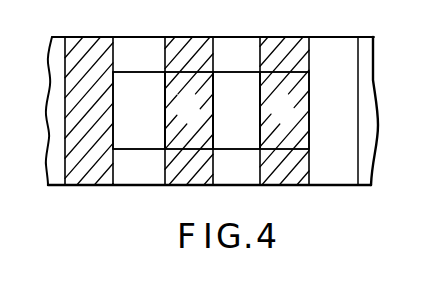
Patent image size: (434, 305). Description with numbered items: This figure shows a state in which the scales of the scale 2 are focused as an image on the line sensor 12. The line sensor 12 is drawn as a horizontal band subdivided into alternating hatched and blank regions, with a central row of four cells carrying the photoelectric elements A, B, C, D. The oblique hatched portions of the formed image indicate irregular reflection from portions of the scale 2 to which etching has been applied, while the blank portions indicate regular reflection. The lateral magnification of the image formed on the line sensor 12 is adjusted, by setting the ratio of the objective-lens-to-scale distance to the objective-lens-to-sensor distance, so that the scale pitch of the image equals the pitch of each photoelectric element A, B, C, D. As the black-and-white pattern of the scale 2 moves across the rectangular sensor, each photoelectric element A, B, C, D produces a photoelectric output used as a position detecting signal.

The scale 2 is at (347, 37).
The line sensor 12 is at (211, 74).
The photoelectric element A is at (139, 110).
The photoelectric element B is at (189, 110).
The photoelectric element C is at (236, 110).
The photoelectric element D is at (284, 110).